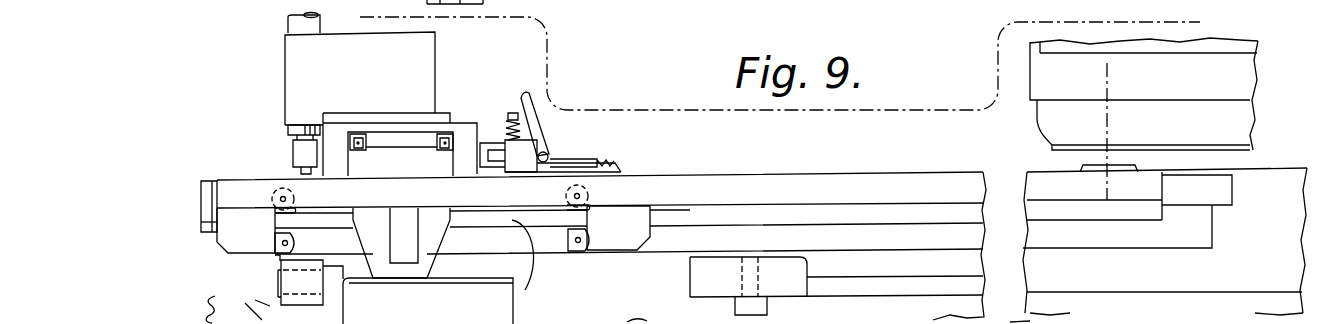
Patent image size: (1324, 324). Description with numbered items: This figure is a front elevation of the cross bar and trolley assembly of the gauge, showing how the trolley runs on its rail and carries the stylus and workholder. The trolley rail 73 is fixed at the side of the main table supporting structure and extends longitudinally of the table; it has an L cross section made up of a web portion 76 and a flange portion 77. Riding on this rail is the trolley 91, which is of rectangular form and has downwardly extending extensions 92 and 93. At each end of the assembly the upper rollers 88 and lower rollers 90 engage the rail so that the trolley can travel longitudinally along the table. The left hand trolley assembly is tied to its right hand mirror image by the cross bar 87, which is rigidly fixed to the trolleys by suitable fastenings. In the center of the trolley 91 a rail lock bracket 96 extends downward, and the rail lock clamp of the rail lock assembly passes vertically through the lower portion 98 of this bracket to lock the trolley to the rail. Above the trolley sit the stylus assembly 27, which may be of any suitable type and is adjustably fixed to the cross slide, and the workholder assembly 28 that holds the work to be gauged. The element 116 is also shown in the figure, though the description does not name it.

The stylus assembly 27 is at (283, 70).
The workholder assembly 28 is at (560, 150).
The trolley rail 73 is at (762, 217).
The web portion 76 is at (213, 181).
The flange portion 77 is at (206, 222).
The cross bar 87 is at (398, 163).
The upper rollers 88 is at (277, 208).
The lower rollers 90 is at (277, 260).
The trolley 91 is at (600, 190).
The downwardly extending extension 92 is at (232, 231).
The downwardly extending extension 93 is at (637, 233).
The rail lock bracket 96 is at (432, 232).
The lower portion of the rail lock bracket 98 is at (407, 250).
The conductor 116 is at (358, 153).